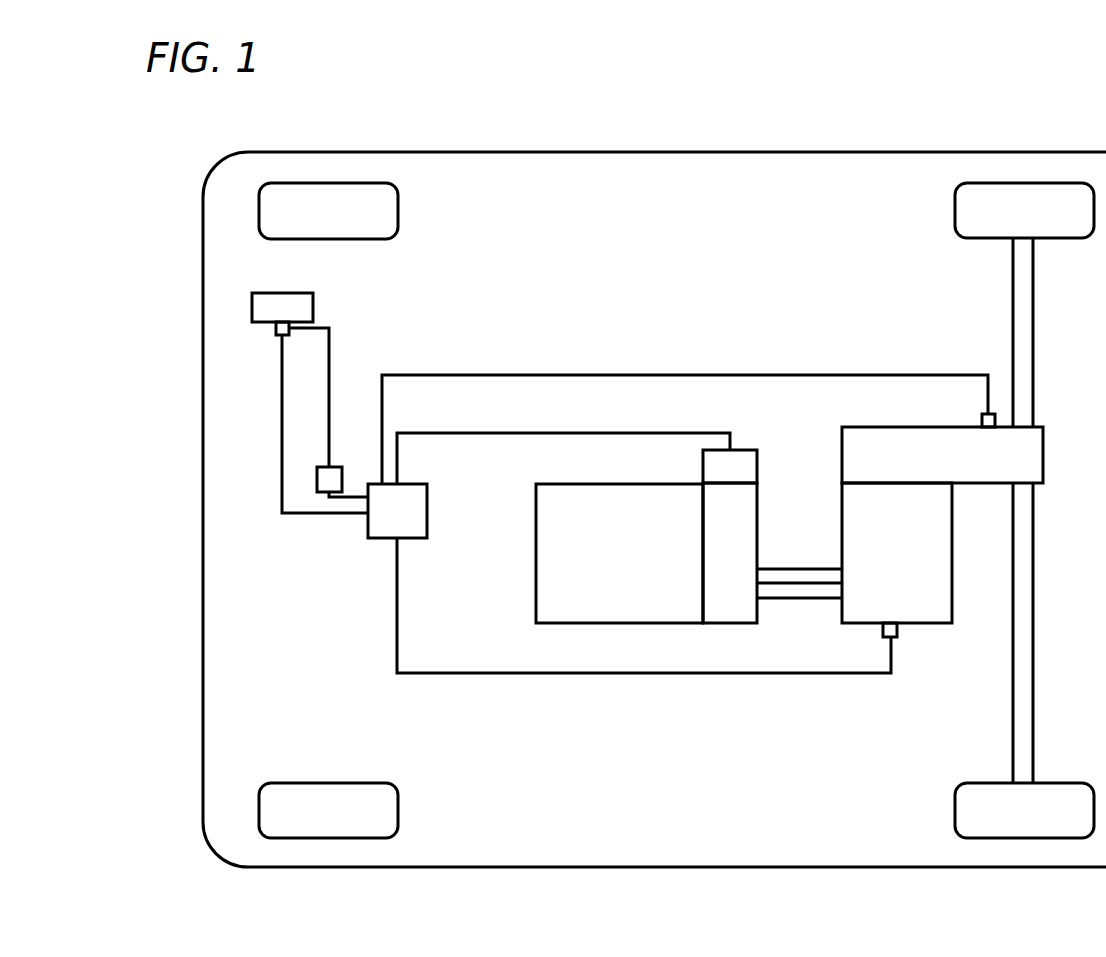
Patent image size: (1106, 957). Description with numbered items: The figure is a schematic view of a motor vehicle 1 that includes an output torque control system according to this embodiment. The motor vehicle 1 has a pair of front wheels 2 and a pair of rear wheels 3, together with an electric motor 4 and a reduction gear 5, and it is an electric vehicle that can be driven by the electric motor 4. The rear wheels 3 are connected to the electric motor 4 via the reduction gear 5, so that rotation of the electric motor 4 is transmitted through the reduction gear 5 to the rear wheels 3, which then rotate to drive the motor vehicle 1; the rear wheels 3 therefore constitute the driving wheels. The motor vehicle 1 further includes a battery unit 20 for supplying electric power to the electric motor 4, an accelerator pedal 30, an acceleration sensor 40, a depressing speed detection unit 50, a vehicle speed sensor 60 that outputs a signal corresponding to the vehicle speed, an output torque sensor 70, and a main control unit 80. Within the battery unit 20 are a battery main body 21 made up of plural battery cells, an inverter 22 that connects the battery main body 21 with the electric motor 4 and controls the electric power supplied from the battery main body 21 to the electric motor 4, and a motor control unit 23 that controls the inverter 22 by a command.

The motor vehicle 1 is at (868, 148).
The front wheels 2 is at (398, 212).
The rear wheels 3 is at (970, 240).
The electric motor 4 is at (938, 617).
The reduction gear 5 is at (1043, 462).
The battery unit 20 is at (654, 528).
The battery main body 21 is at (563, 484).
The inverter 22 is at (757, 532).
The motor control unit 23 is at (757, 470).
The accelerator pedal 30 is at (313, 307).
The acceleration sensor 40 is at (274, 330).
The depressing speed detection unit 50 is at (322, 467).
The vehicle speed sensor 60 is at (982, 418).
The output torque sensor 70 is at (897, 628).
The main control unit 80 is at (377, 540).